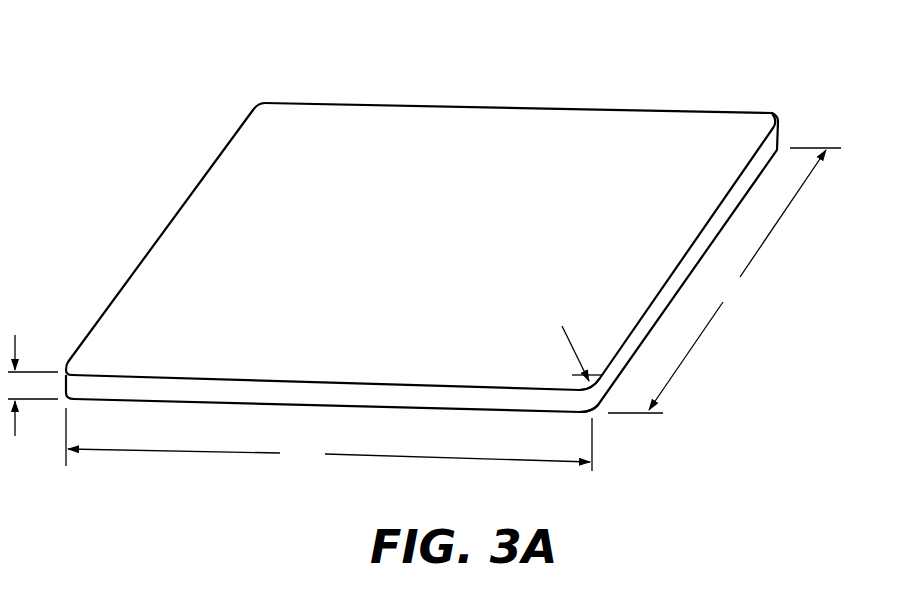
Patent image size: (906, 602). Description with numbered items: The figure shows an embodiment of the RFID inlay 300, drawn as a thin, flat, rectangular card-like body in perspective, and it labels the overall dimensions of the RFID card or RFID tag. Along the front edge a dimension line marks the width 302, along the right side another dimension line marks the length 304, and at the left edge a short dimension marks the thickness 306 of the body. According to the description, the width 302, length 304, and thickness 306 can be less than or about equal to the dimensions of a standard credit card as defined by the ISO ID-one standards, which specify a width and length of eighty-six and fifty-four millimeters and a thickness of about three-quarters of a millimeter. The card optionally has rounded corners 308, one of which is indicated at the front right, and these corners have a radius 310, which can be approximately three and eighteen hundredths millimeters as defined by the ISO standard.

The glass sheet 300 is at (226, 54).
The width 302 is at (300, 468).
The length 304 is at (735, 300).
The thickness 306 is at (25, 388).
The rounded corners 308 is at (597, 413).
The radius 310 is at (545, 312).